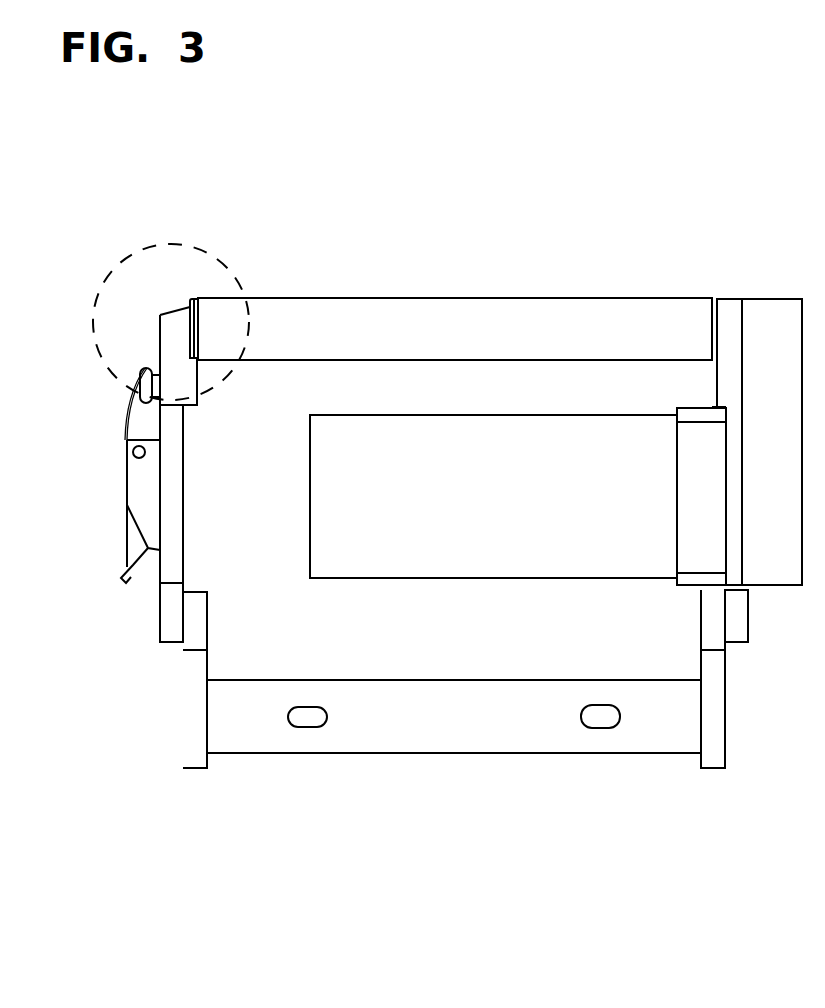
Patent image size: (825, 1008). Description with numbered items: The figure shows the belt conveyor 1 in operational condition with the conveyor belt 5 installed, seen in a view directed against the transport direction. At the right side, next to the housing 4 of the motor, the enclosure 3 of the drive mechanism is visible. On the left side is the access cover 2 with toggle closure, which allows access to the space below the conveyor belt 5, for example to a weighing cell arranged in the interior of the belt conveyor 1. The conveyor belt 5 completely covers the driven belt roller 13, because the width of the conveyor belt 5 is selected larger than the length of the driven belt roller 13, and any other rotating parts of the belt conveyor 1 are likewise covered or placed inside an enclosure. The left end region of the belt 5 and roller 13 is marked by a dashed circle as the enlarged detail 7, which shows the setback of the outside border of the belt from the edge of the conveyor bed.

The belt conveyor 1 is at (722, 252).
The access cover 2 is at (143, 498).
The enclosure of the drive mechanism 3 is at (767, 555).
The housing of the motor 4 is at (420, 553).
The conveyor belt 5 is at (370, 297).
The roller end portion 7 is at (197, 298).
The driven belt roller 13 is at (504, 280).